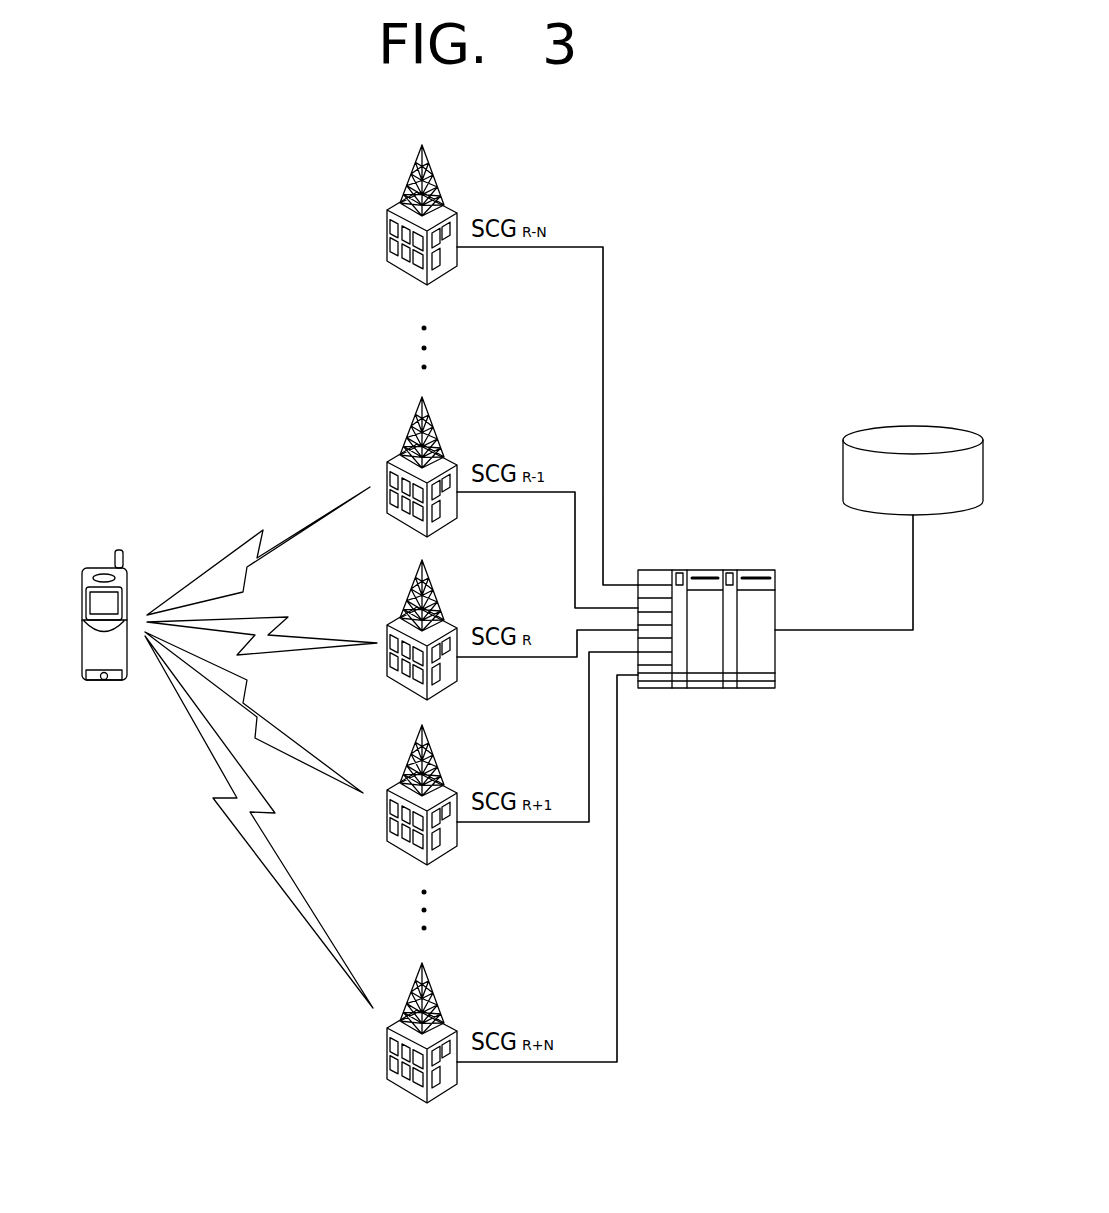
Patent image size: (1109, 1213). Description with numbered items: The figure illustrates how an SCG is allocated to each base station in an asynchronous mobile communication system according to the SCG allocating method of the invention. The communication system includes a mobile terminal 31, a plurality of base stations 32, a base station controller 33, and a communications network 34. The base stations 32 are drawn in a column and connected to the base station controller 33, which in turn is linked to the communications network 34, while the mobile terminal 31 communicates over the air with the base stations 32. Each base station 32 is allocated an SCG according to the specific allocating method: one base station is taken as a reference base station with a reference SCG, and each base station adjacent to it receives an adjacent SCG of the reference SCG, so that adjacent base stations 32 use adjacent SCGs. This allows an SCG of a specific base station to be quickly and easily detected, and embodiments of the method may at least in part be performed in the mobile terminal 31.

The mobile terminal 31 is at (85, 568).
The base stations 32 is at (432, 170).
The base station controller 33 is at (708, 570).
The communications network 34 is at (913, 427).